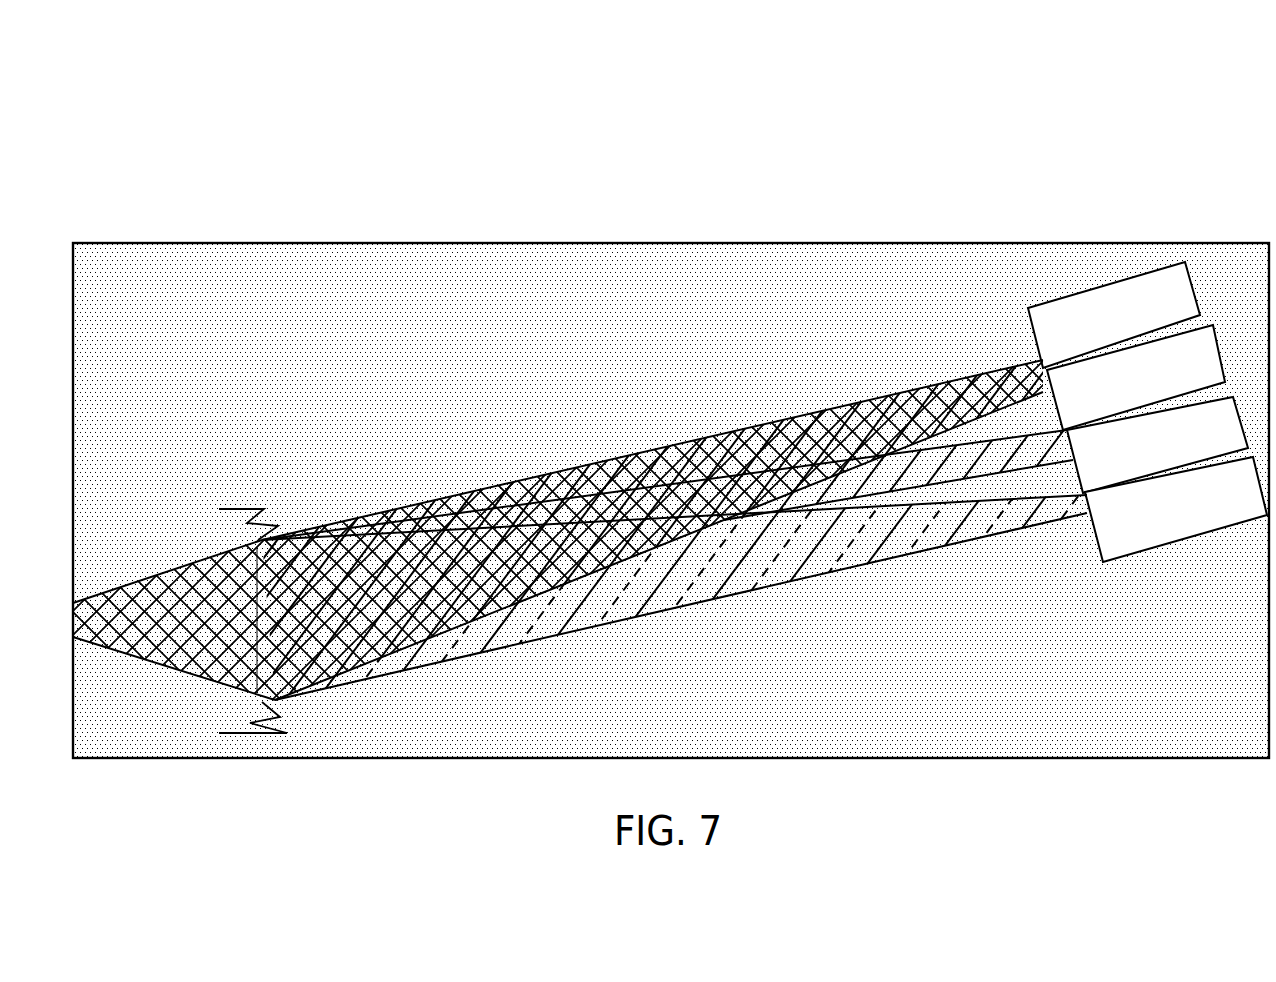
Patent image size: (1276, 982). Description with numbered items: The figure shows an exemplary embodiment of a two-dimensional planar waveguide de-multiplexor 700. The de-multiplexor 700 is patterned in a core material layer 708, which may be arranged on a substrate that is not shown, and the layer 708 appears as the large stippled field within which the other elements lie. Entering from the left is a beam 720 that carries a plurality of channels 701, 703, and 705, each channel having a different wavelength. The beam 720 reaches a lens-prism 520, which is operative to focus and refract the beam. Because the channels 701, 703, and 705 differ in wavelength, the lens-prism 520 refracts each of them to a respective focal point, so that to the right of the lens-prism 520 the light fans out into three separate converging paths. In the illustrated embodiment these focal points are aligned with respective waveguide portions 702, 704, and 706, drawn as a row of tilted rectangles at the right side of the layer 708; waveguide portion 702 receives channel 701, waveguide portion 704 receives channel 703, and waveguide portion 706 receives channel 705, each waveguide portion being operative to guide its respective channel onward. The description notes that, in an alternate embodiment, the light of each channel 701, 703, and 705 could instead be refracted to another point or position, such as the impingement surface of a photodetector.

The two-dimensional planar waveguide de-multiplexor 700 is at (1198, 118).
The core material layer 708 is at (918, 258).
The waveguide portion 702 is at (1073, 357).
The waveguide portion 704 is at (1107, 425).
The waveguide portion 706 is at (1120, 493).
The beam 720 is at (148, 583).
The lens-prism 520 is at (267, 507).
The channel 701 is at (830, 418).
The channel 703 is at (977, 440).
The channel 705 is at (963, 537).